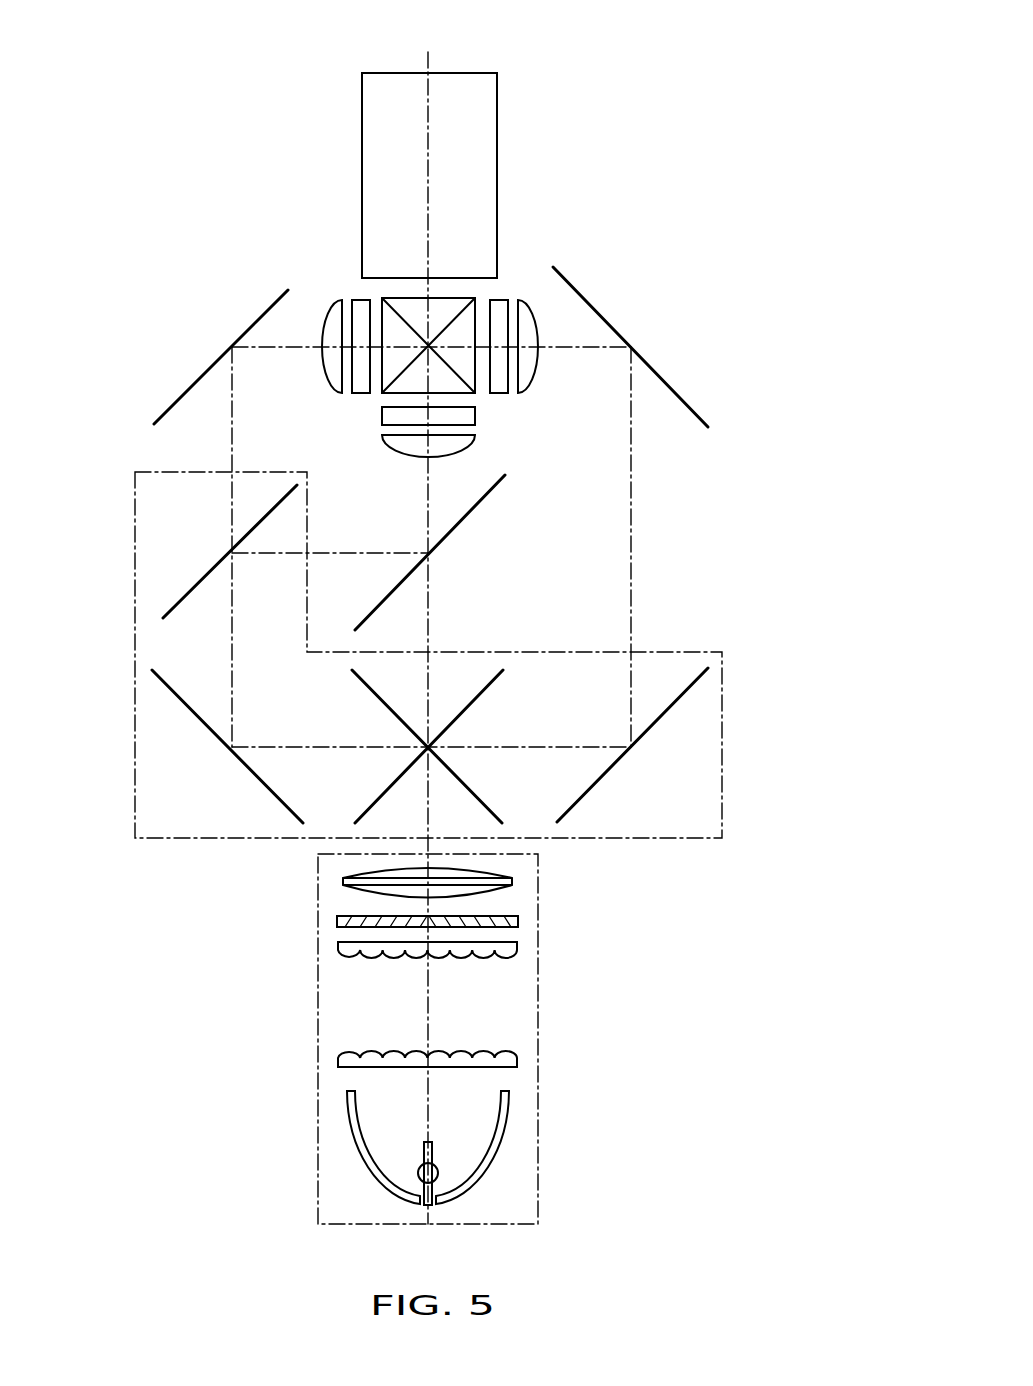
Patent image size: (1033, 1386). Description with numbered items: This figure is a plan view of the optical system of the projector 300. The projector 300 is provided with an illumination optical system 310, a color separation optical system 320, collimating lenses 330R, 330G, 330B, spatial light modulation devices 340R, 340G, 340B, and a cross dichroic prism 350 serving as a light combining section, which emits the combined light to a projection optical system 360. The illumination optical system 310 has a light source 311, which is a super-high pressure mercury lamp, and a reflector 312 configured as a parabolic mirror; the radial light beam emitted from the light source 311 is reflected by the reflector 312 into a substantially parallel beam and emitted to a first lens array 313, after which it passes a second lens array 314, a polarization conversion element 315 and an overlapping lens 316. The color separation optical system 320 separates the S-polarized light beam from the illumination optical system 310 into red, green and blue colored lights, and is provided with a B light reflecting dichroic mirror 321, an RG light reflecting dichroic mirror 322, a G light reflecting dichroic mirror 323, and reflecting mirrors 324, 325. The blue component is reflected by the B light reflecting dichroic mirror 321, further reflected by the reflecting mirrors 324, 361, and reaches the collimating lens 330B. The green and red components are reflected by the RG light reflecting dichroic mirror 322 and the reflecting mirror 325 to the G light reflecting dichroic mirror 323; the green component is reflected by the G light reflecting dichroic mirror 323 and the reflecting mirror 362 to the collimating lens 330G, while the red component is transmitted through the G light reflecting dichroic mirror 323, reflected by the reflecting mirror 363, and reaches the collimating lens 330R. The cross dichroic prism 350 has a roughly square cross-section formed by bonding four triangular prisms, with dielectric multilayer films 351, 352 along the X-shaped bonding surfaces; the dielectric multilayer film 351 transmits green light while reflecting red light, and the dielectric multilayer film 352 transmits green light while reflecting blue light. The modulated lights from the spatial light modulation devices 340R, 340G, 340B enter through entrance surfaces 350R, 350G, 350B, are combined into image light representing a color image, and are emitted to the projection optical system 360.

The projector 300 is at (642, 116).
The illumination optical system 310 is at (318, 1107).
The light source 311 is at (438, 1173).
The reflector 312 is at (505, 1127).
The first lens array 313 is at (517, 1061).
The second lens array 314 is at (517, 948).
The polarization conversion element 315 is at (518, 921).
The overlapping lens 316 is at (514, 880).
The color separation optical system 320 is at (687, 652).
The B light reflecting dichroic mirror 321 is at (483, 692).
The RG light reflecting dichroic mirror 322 is at (480, 793).
The G light reflecting dichroic mirror 323 is at (197, 585).
The reflecting mirror 324 is at (607, 775).
The reflecting mirror 325 is at (252, 775).
The collimating lens 330R is at (320, 351).
The collimating lens 330G is at (400, 455).
The collimating lens 330B is at (523, 300).
The spatial light modulation device 340R is at (362, 300).
The spatial light modulation device 340G is at (383, 416).
The spatial light modulation device 340B is at (498, 393).
The cross dichroic prism 350 is at (453, 298).
The entrance surface 350R is at (379, 298).
The entrance surface 350G is at (384, 396).
The entrance surface 350B is at (492, 300).
The dielectric multilayer film 351 is at (383, 391).
The dielectric multilayer film 352 is at (477, 391).
The projection optical system 360 is at (462, 73).
The reflecting mirror 361 is at (672, 384).
The reflecting mirror 362 is at (473, 509).
The reflecting mirror 363 is at (185, 391).